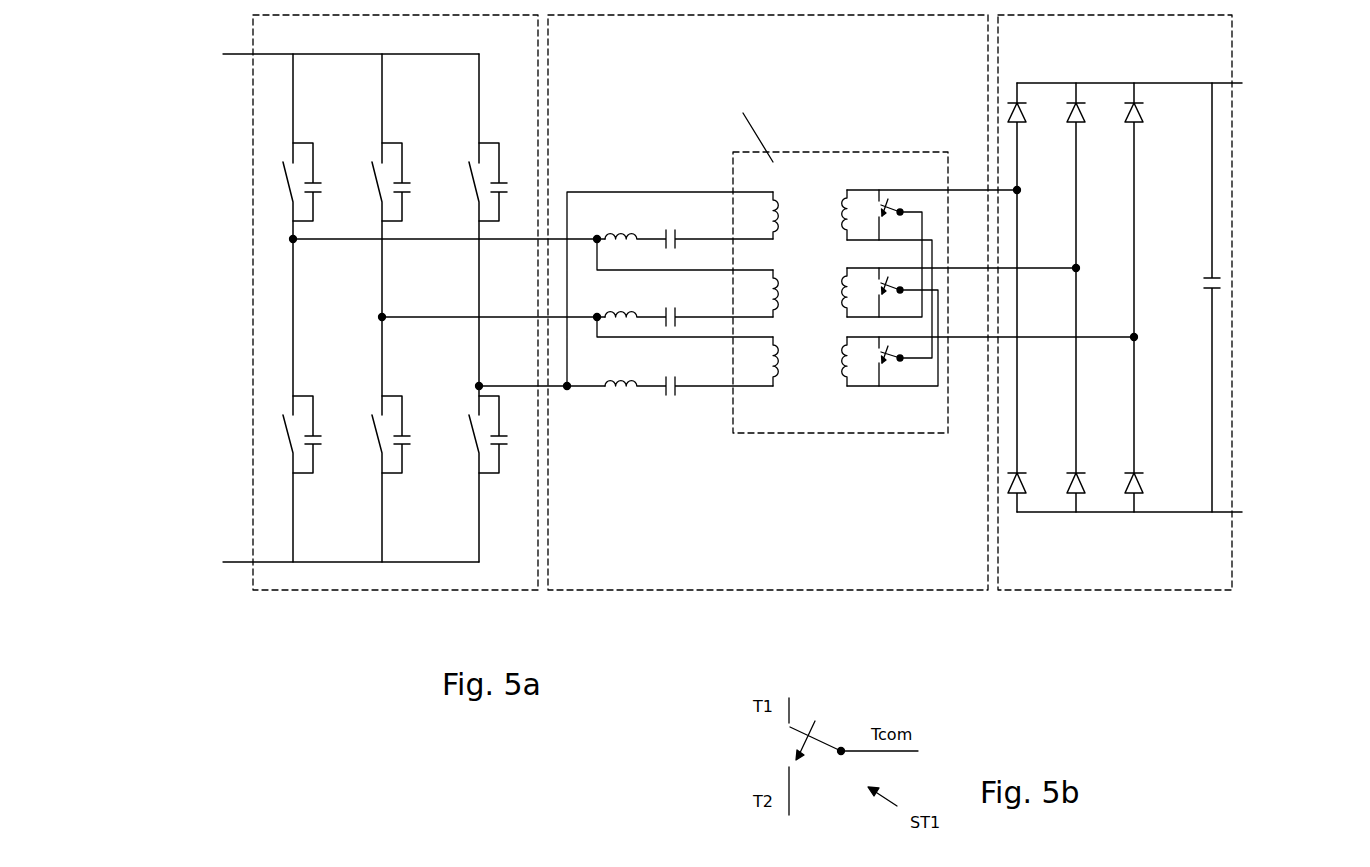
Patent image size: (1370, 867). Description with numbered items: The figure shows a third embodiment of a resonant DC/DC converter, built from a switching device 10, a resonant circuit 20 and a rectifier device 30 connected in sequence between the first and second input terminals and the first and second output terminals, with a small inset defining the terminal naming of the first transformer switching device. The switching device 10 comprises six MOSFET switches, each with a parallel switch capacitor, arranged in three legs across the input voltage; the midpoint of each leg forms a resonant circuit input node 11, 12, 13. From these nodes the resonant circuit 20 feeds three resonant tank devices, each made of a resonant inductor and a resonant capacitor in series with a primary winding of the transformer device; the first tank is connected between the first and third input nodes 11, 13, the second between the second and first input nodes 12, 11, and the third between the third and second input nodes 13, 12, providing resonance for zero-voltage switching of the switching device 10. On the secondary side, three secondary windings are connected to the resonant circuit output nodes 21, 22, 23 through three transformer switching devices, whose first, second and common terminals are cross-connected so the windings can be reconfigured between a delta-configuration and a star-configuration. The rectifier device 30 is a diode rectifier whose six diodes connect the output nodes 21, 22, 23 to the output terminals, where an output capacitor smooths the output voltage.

The switching device 10 is at (303, 580).
The first resonant circuit input node 11 is at (448, 252).
The second resonant circuit input node 12 is at (492, 309).
The third resonant circuit input node 13 is at (541, 372).
The resonant circuit 20 is at (587, 581).
The first resonant circuit output node 21 is at (934, 183).
The second resonant circuit output node 22 is at (963, 261).
The third resonant circuit output node 23 is at (992, 329).
The rectifier device 30 is at (1037, 581).